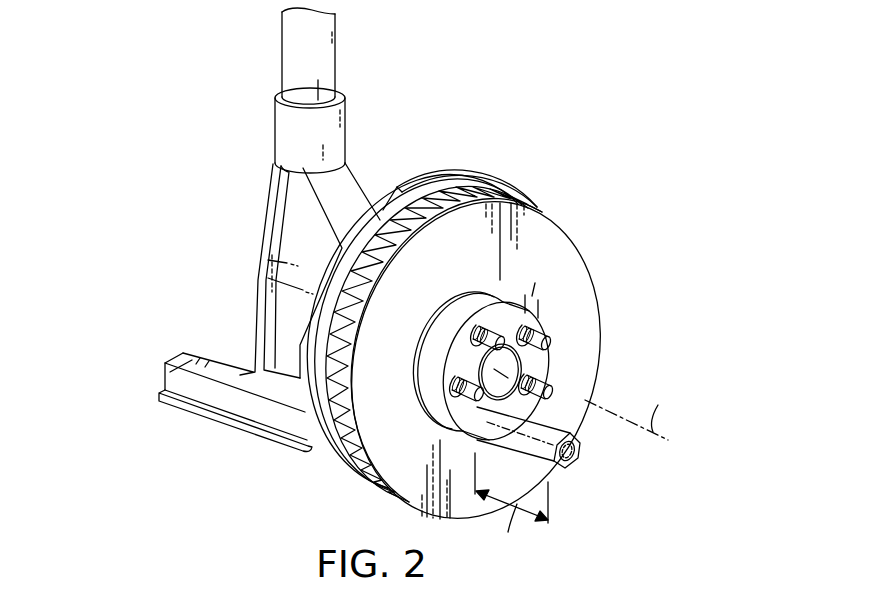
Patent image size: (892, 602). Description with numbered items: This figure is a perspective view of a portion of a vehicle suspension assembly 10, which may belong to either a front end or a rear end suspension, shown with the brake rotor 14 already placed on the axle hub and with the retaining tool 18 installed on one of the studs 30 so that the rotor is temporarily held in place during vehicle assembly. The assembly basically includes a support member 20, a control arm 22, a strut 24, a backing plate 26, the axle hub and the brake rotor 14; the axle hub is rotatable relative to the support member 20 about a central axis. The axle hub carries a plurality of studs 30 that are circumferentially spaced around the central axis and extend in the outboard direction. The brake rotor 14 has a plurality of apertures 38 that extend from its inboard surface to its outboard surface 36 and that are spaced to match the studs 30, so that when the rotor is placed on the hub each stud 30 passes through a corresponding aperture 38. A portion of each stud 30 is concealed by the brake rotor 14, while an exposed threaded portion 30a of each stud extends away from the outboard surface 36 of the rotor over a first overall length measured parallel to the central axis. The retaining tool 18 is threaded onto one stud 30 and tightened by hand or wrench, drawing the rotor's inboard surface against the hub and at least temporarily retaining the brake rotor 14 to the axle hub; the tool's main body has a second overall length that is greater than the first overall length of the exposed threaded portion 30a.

The vehicle suspension assembly 10 is at (546, 120).
The brake rotor 14 is at (571, 295).
The retaining tool 18 is at (563, 462).
The support member 20 is at (345, 192).
The control arm 22 is at (222, 398).
The strut 24 is at (300, 45).
The backing plate 26 is at (450, 183).
The studs 30 is at (549, 338).
The exposed threaded portion 30a is at (522, 302).
The outboard surface 36 is at (466, 418).
The apertures 38 is at (428, 340).